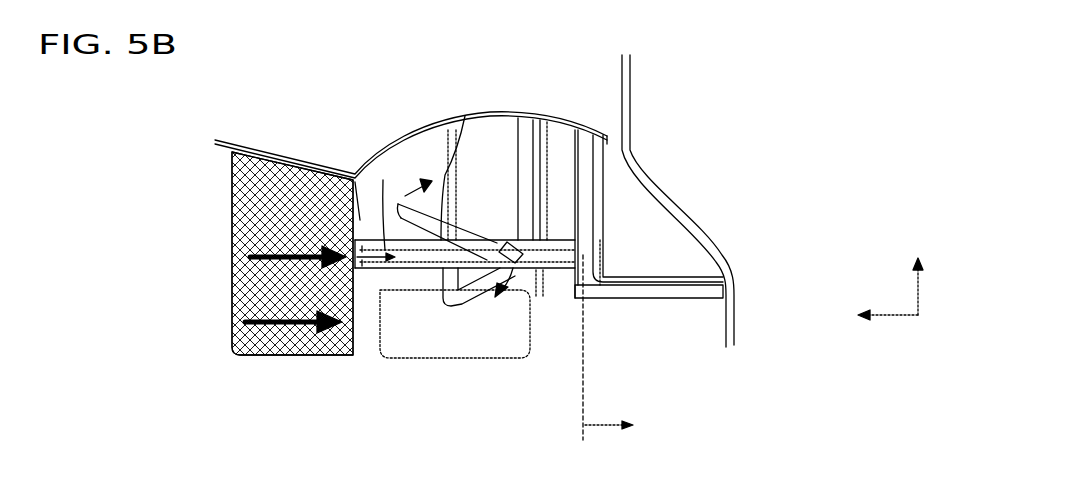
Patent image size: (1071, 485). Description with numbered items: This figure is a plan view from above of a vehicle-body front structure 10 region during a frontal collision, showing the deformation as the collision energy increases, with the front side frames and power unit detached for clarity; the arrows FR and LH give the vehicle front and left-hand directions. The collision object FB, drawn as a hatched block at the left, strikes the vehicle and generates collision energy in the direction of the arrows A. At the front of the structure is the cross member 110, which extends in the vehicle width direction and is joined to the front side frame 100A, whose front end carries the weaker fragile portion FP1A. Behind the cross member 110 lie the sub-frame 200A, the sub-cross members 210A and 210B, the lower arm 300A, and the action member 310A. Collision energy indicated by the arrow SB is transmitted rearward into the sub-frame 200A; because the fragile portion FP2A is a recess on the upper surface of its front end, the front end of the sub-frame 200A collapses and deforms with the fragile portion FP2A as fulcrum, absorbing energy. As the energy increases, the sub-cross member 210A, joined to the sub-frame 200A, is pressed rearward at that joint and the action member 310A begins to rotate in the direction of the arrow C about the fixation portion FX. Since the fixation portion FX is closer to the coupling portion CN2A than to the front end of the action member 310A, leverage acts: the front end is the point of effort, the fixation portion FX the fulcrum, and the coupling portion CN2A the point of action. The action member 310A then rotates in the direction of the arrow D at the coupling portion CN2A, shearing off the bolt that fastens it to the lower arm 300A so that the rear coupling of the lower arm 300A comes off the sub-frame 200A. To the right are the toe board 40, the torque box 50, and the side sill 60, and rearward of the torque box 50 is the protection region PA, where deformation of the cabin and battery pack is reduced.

The cross member 110 is at (353, 222).
The sub-cross member 210A is at (383, 180).
The fragile portion FP2A is at (370, 222).
The action member 310A is at (465, 116).
The sub-cross member 210B is at (522, 142).
The toe board 40 is at (548, 120).
The rotation direction arrow C is at (405, 196).
The fragile portion FP1A is at (292, 158).
The collision object FB is at (258, 222).
The torque box 50 is at (587, 167).
The fixation portion FX is at (480, 240).
The collision energy direction arrow A is at (283, 268).
The collision energy arrow SB is at (372, 270).
The sub-frame 200A is at (400, 270).
The front side frame 100A is at (422, 270).
The front wheel 10 is at (460, 347).
The lower arm 300A is at (483, 297).
The rotation direction arrow D is at (520, 262).
The coupling portion CN2A is at (578, 305).
The side sill 60 is at (680, 290).
The protection region PA is at (632, 347).
The left-hand direction LH is at (920, 266).
The front direction FR is at (863, 315).